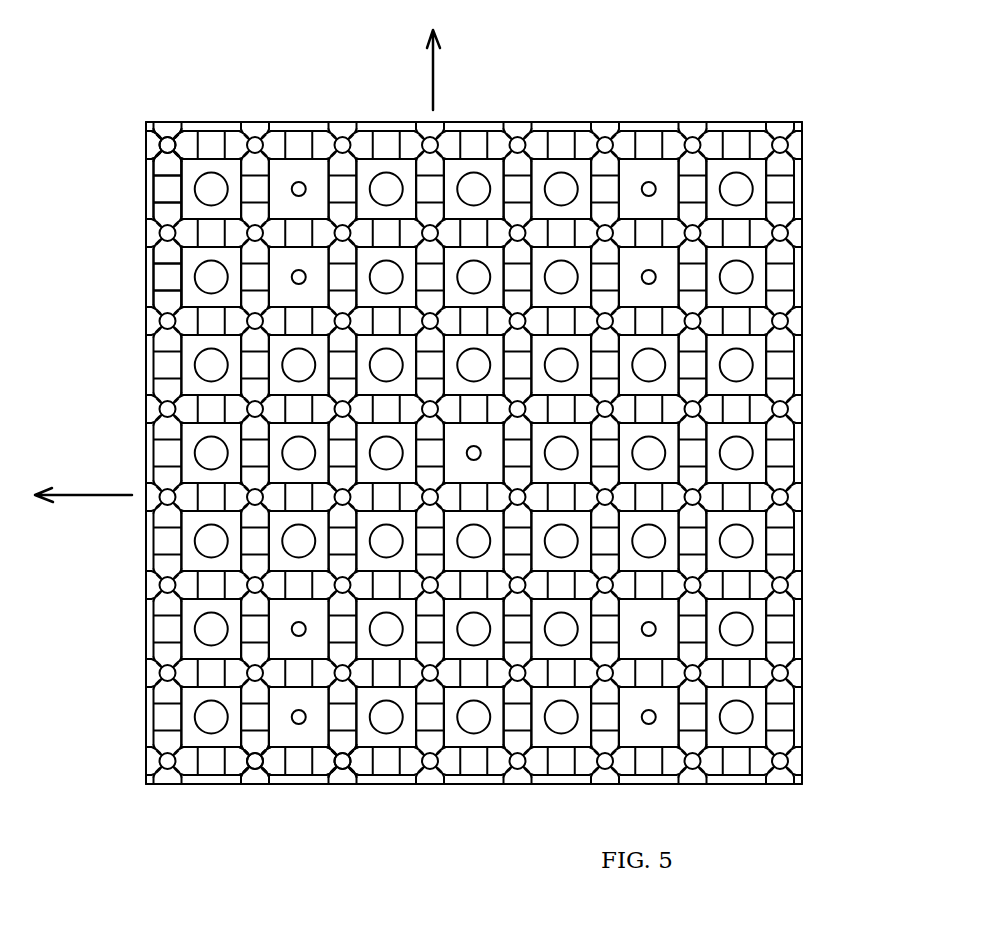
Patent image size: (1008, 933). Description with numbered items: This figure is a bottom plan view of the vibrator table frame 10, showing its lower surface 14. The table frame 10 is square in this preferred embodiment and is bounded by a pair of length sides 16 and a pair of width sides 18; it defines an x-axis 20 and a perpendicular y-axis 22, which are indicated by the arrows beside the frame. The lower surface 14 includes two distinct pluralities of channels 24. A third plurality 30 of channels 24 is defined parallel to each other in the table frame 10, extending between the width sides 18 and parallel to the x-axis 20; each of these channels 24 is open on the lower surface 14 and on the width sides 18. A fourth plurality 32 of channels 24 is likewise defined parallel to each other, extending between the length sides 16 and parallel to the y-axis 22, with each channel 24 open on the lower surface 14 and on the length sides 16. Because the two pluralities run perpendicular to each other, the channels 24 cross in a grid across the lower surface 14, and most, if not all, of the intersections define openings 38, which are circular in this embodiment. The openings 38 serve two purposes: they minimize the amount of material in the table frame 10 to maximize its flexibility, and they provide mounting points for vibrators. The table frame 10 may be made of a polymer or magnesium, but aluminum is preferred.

The table frame 10 is at (457, 455).
The lower surface 14 is at (232, 175).
The length sides 16 is at (660, 122).
The width sides 18 is at (802, 538).
The x-axis 20 is at (82, 497).
The y-axis 22 is at (436, 78).
The channels 24 is at (154, 152).
The third plurality of channels 30 is at (143, 320).
The fourth plurality of channels 32 is at (342, 778).
The openings 38 is at (765, 263).